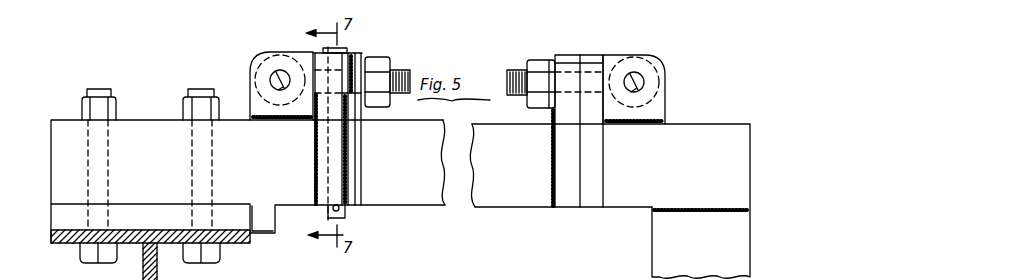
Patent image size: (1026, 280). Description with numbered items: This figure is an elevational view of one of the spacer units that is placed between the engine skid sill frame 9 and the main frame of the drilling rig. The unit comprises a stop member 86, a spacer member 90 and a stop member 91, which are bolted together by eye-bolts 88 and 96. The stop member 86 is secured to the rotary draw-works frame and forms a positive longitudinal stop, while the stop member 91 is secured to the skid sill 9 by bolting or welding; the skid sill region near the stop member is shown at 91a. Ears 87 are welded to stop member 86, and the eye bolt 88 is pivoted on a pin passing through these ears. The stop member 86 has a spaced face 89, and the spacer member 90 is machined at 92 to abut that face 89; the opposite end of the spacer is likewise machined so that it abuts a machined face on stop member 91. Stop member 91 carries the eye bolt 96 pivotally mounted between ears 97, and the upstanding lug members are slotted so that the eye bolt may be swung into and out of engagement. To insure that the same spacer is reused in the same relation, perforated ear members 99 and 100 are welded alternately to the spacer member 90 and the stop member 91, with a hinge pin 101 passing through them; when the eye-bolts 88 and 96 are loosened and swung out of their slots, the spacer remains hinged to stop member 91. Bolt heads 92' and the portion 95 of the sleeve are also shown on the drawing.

The skid sill frame 9 is at (228, 240).
The stop member 86 is at (677, 132).
The ears 87 is at (662, 103).
The eye bolt 88 is at (511, 55).
The face 89 is at (577, 200).
The spacer member 90 is at (500, 203).
The stop member 91 is at (299, 197).
The housing step 91a is at (268, 233).
The machined end 92 is at (578, 121).
The bolts 92' is at (150, 154).
The sleeve parts 95 is at (587, 163).
The eye bolt 96 is at (398, 70).
The ears 97 is at (250, 96).
The perforated ear member 99 is at (312, 54).
The perforated ear member 100 is at (352, 125).
The hinge pin 101 is at (348, 50).